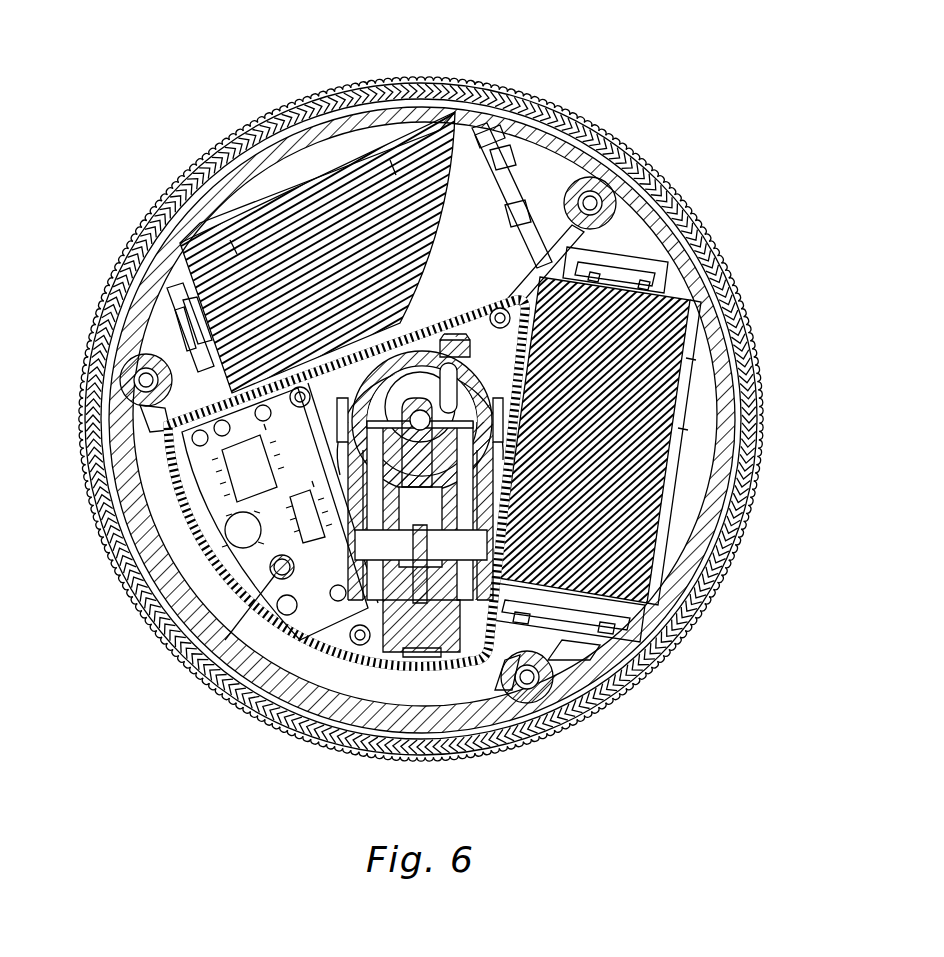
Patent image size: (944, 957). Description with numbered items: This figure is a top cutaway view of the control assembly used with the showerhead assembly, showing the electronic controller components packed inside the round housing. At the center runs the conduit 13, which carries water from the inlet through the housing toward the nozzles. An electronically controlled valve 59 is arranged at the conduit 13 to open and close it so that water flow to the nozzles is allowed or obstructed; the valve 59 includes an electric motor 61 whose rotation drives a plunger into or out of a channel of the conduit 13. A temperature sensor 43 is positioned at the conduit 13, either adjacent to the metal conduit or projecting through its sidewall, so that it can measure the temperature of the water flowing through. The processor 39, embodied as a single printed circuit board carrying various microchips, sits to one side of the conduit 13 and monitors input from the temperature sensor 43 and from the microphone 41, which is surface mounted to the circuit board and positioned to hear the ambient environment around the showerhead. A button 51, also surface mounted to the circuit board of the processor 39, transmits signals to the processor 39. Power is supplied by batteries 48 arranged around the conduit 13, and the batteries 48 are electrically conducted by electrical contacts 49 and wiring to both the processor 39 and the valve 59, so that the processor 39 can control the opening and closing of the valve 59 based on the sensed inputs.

The conduit 13 is at (398, 388).
The processor 39 is at (203, 482).
The microphone 41 is at (203, 673).
The temperature sensor 43 is at (455, 397).
The batteries 48 is at (333, 197).
The electrical contacts 49 is at (508, 197).
The button 51 is at (233, 533).
The electronically controlled valve 59 is at (490, 613).
The electric motor 61 is at (385, 667).